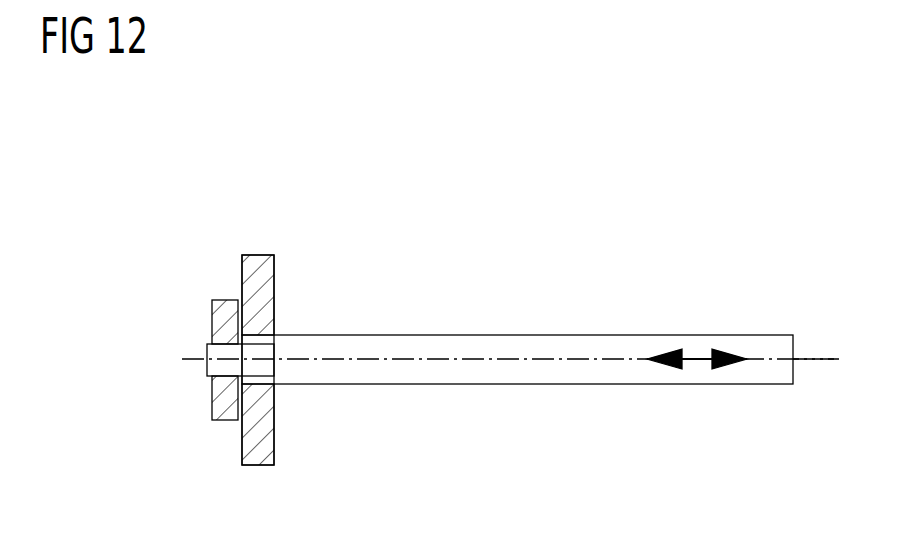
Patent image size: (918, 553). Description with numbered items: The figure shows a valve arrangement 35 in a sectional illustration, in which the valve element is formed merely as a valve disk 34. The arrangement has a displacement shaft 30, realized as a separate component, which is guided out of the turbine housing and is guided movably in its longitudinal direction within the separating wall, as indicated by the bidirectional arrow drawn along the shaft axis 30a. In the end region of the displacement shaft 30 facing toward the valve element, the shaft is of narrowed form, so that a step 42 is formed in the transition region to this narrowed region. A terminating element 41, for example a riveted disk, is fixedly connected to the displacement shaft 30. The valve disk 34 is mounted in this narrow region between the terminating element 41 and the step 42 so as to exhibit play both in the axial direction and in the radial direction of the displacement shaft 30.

The drive arrangement 35 is at (468, 225).
The displacement shaft 30 is at (590, 336).
The shaft axis 30a is at (836, 361).
The valve disk 34 is at (257, 452).
The terminating element 41 is at (222, 311).
The step 42 is at (274, 375).